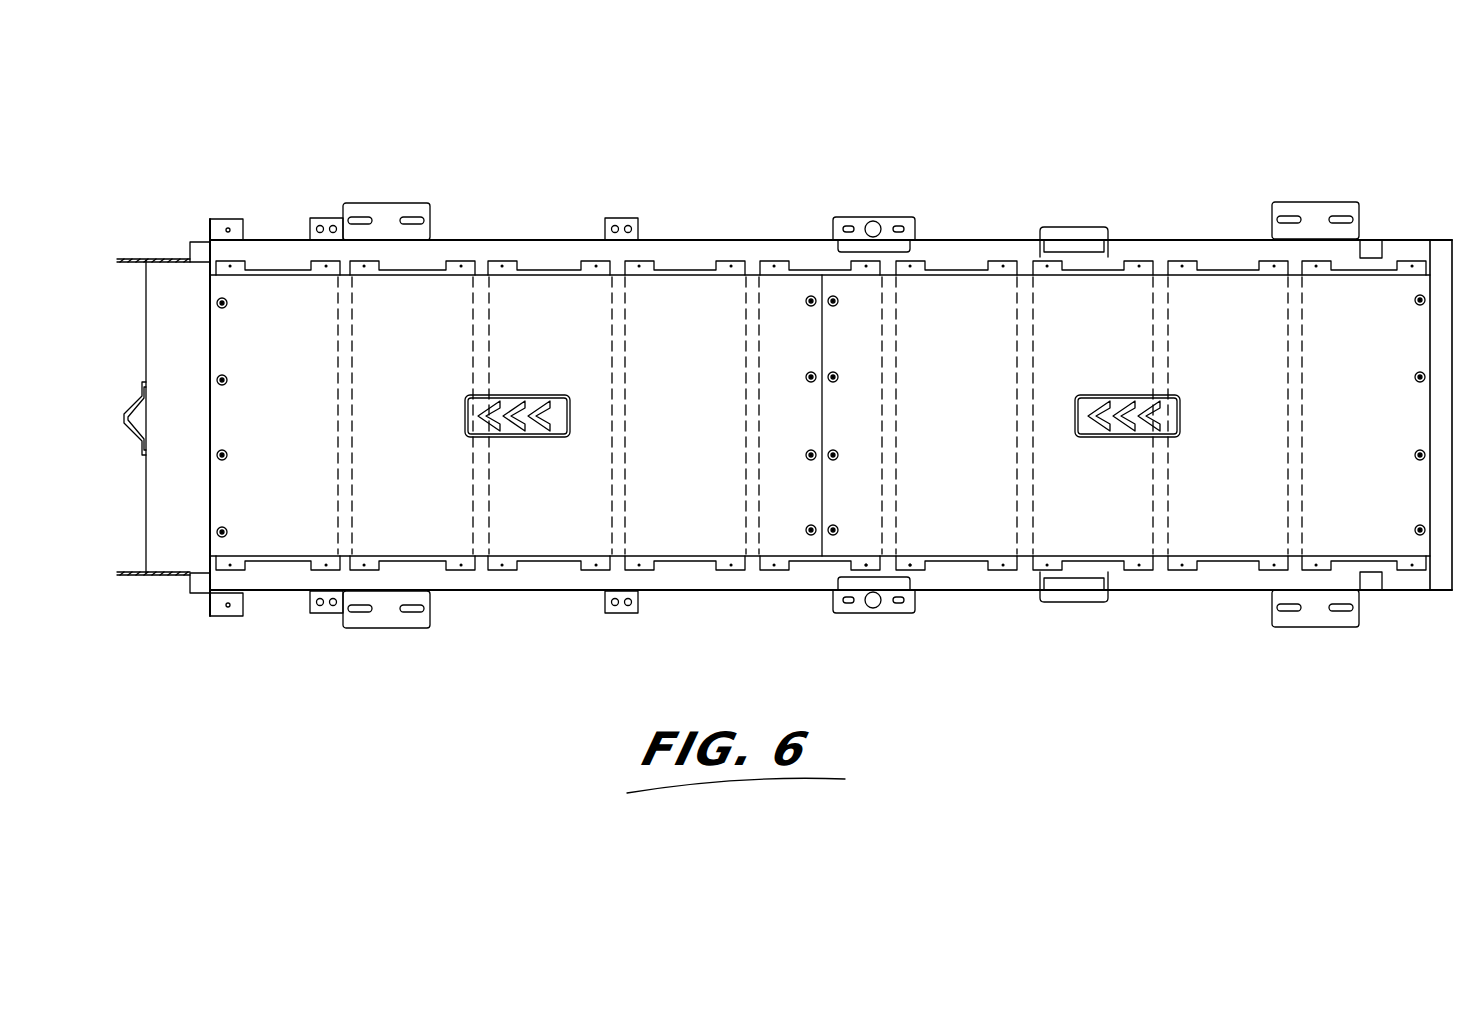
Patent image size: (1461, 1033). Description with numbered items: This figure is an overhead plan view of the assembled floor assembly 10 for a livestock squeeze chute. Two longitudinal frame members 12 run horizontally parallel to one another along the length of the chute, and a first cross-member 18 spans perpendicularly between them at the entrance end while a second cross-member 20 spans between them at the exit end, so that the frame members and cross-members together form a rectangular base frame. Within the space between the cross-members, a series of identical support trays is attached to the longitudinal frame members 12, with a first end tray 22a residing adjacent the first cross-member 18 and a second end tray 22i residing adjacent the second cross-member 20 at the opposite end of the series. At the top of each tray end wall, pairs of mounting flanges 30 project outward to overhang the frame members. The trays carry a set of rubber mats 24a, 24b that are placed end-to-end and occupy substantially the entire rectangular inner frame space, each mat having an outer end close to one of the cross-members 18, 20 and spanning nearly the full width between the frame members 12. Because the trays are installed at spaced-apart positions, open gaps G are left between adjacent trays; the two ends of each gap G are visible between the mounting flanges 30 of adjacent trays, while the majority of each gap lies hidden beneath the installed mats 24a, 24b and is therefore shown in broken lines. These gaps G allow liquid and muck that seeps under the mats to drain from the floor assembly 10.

The floor assembly 10 is at (1078, 146).
The longitudinal frame members 12 is at (692, 244).
The first cross-member 18 is at (1440, 282).
The second cross-member 20 is at (168, 277).
The second end tray 22i is at (272, 261).
The first end tray 22a is at (1403, 261).
The rubber mat 24a is at (1119, 301).
The rubber mat 24b is at (444, 304).
The mounting flanges 30 is at (902, 569).
The gaps G is at (347, 270).